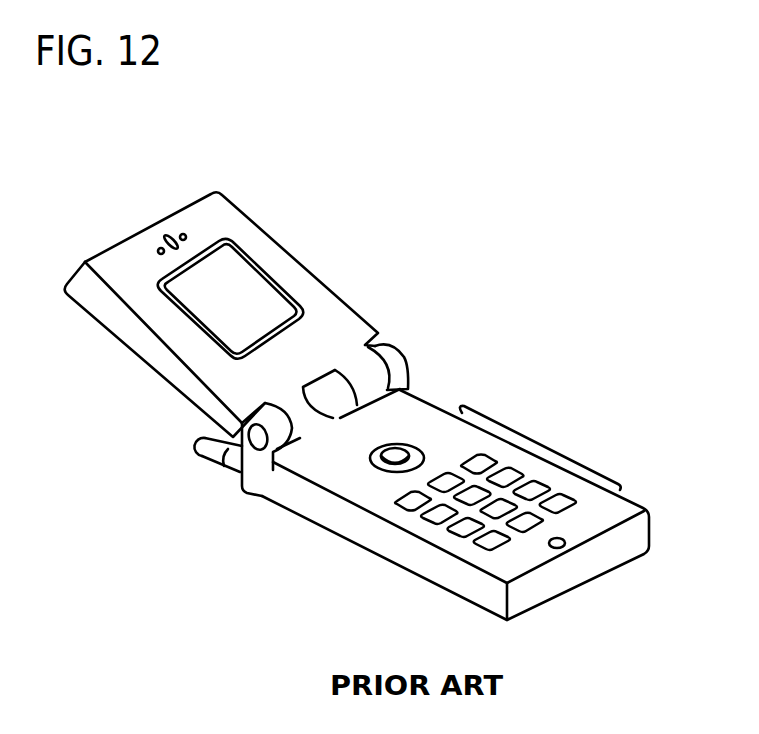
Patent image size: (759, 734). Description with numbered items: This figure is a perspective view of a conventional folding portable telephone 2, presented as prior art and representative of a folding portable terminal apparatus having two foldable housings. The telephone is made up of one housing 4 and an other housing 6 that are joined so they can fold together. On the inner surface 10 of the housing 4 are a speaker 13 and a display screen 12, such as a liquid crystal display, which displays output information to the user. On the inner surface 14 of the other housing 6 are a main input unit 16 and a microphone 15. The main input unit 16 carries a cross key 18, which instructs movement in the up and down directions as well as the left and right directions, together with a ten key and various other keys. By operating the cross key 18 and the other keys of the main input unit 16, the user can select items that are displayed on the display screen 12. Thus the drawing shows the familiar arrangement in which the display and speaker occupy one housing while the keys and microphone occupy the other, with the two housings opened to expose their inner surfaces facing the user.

The folding portable telephone 2 is at (146, 474).
The housing 4 is at (157, 363).
The other housing 6 is at (360, 537).
The inner surface 10 is at (343, 318).
The display screen 12 is at (257, 288).
The speaker 13 is at (170, 235).
The inner surface 14 is at (435, 427).
The microphone 15 is at (567, 538).
The main input unit 16 is at (538, 443).
The cross key 18 is at (399, 452).